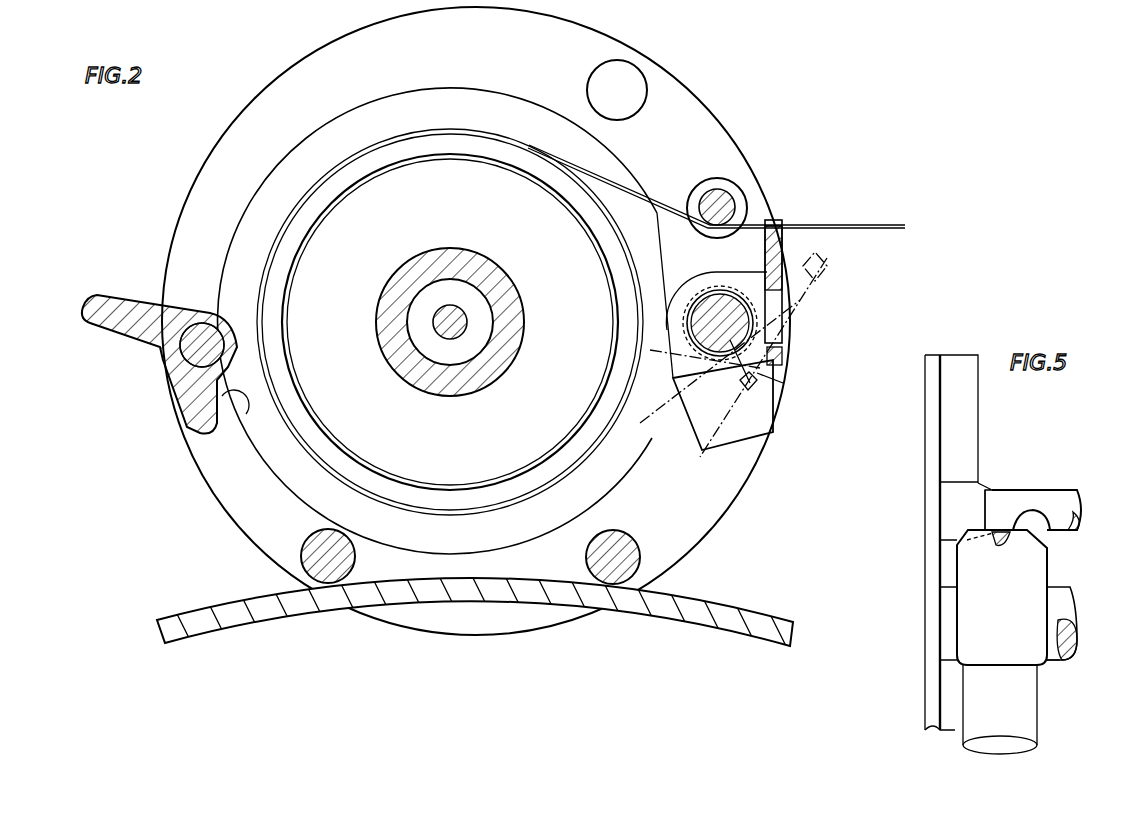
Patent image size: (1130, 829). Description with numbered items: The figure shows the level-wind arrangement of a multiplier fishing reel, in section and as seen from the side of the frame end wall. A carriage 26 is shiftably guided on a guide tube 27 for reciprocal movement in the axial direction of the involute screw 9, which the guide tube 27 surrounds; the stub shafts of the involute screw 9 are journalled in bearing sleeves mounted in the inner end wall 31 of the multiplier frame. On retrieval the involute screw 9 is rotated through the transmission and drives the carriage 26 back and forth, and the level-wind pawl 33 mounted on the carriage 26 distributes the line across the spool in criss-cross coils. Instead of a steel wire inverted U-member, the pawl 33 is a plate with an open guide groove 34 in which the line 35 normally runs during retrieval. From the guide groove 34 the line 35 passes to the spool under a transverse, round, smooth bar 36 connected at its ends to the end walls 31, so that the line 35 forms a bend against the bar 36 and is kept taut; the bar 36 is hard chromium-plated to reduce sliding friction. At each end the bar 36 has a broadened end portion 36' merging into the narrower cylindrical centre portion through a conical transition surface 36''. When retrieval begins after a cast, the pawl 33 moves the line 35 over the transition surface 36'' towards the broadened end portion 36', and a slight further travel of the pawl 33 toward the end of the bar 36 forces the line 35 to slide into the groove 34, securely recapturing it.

In FIG. 2, the involute screw 9 is at (760, 378).
In FIG. 5, the involute screw 9 is at (1075, 640).
In FIG. 2, the carriage 26 is at (700, 287).
In FIG. 2, the guide tube 27 is at (782, 358).
In FIG. 5, the guide tube 27 is at (1052, 662).
In FIG. 5, the inner end wall 31 is at (926, 428).
In FIG. 2, the level-wind pawl 33 is at (785, 250).
In FIG. 5, the level-wind pawl 33 is at (1035, 562).
In FIG. 2, the guide groove 34 is at (785, 228).
In FIG. 5, the guide groove 34 is at (1050, 530).
In FIG. 2, the line 35 is at (878, 227).
In FIG. 5, the line 35 is at (1000, 542).
In FIG. 2, the bar 36 is at (741, 199).
In FIG. 5, the bar 36 is at (1039, 499).
In FIG. 5, the broadened end portion 36' is at (932, 502).
In FIG. 5, the transition surface 36'' is at (1017, 495).